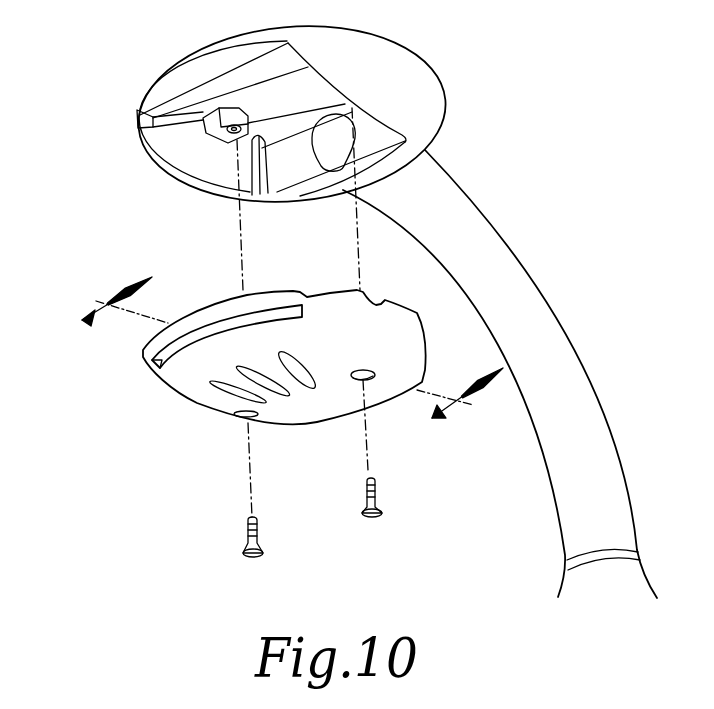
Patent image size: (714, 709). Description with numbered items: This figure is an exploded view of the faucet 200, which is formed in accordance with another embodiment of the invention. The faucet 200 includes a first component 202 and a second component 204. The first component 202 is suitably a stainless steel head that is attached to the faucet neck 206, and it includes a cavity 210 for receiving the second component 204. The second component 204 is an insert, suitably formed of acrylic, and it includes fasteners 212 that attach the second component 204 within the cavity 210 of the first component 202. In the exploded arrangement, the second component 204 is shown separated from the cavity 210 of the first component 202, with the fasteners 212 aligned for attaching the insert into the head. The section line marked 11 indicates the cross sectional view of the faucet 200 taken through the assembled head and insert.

The headrest assembly 200 is at (344, 305).
The headrest cup 202 is at (433, 98).
The mounting plate 204 is at (200, 400).
The support arm 206 is at (525, 273).
The boss 210 is at (180, 120).
The screws 212 is at (243, 543).
The section line 11- 11 is at (275, 357).